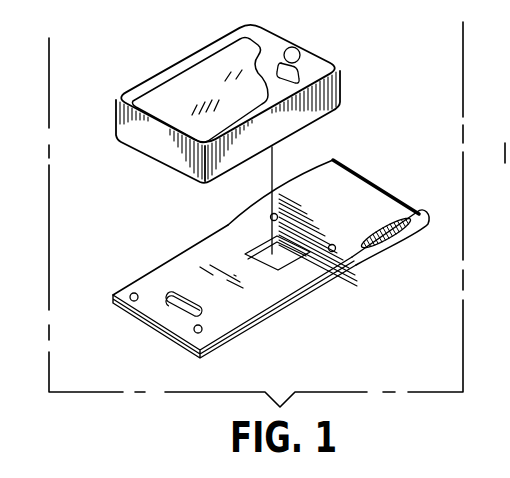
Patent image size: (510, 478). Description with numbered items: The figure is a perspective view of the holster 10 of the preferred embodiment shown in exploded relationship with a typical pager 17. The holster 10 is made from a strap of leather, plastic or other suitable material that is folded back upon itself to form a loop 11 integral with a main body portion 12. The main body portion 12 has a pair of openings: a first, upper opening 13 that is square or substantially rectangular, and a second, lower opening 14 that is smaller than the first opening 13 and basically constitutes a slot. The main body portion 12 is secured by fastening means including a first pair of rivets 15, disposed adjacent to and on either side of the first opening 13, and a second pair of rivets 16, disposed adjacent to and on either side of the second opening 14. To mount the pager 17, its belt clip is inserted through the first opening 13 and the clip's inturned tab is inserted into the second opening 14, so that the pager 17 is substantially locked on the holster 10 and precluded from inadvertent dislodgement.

The holster 10 is at (186, 208).
The loop 11 is at (418, 210).
The main body portion 12 is at (193, 250).
The first opening 13 is at (284, 264).
The second opening 14 is at (203, 311).
The first pair of rivets 15 is at (332, 245).
The second pair of rivets 16 is at (196, 333).
The pager 17 is at (185, 58).